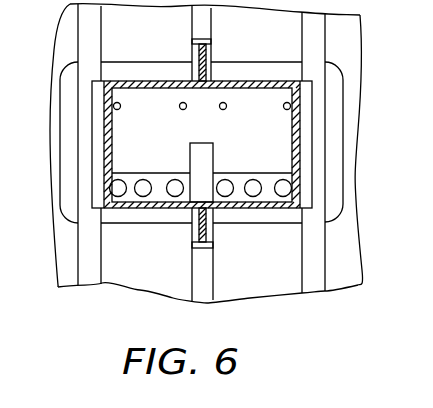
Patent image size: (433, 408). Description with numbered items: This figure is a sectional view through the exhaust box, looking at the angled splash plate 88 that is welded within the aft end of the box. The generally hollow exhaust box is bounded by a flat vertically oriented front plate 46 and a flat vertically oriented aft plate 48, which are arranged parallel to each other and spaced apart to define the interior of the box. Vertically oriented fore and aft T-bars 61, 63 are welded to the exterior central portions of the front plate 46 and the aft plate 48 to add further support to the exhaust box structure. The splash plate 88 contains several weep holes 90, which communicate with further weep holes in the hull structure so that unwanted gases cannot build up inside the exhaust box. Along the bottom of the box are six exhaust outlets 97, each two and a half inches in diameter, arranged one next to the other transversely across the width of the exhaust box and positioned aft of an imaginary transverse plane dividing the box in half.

The front plate 46 is at (145, 80).
The fore T-bar 61 is at (207, 50).
The angled splash plate 88 is at (282, 137).
The weep holes 90 is at (284, 104).
The exhaust outlets 97 is at (124, 182).
The aft plate 48 is at (137, 209).
The aft T-bar 63 is at (196, 232).